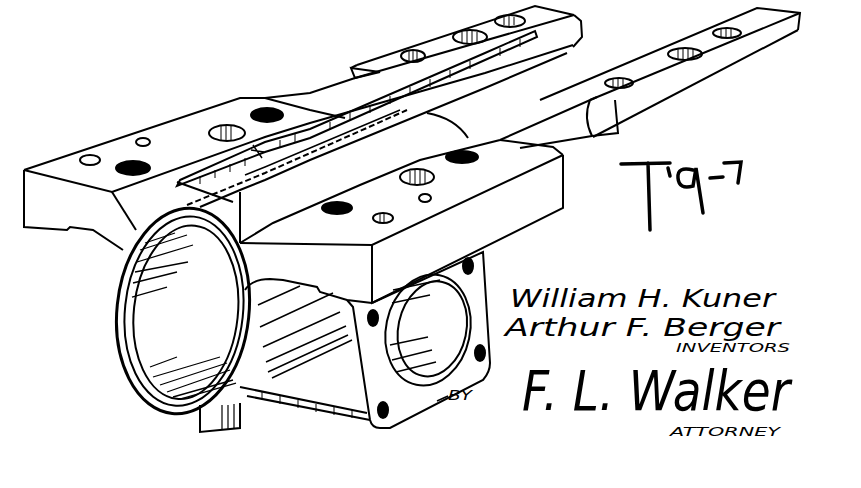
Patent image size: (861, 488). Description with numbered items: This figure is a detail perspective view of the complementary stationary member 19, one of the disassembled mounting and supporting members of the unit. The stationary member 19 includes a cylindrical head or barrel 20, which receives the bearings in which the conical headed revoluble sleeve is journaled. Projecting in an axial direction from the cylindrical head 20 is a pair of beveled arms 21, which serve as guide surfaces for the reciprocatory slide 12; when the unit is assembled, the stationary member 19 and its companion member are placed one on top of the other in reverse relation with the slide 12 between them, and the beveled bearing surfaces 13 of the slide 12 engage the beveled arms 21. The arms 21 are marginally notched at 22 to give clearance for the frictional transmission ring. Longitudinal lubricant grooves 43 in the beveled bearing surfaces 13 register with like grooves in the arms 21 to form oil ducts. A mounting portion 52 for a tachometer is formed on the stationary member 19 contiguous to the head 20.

The slide 12 is at (178, 103).
The beveled bearing surfaces 13 is at (298, 126).
The complementary stationary member 19 is at (458, 28).
The cylindrical head or barrel 20 is at (135, 372).
The beveled arms 21 is at (660, 58).
The marginal notch 22 is at (345, 85).
The longitudinal lubricant grooves 43 is at (418, 80).
The tachometer mounting portion 52 is at (317, 407).